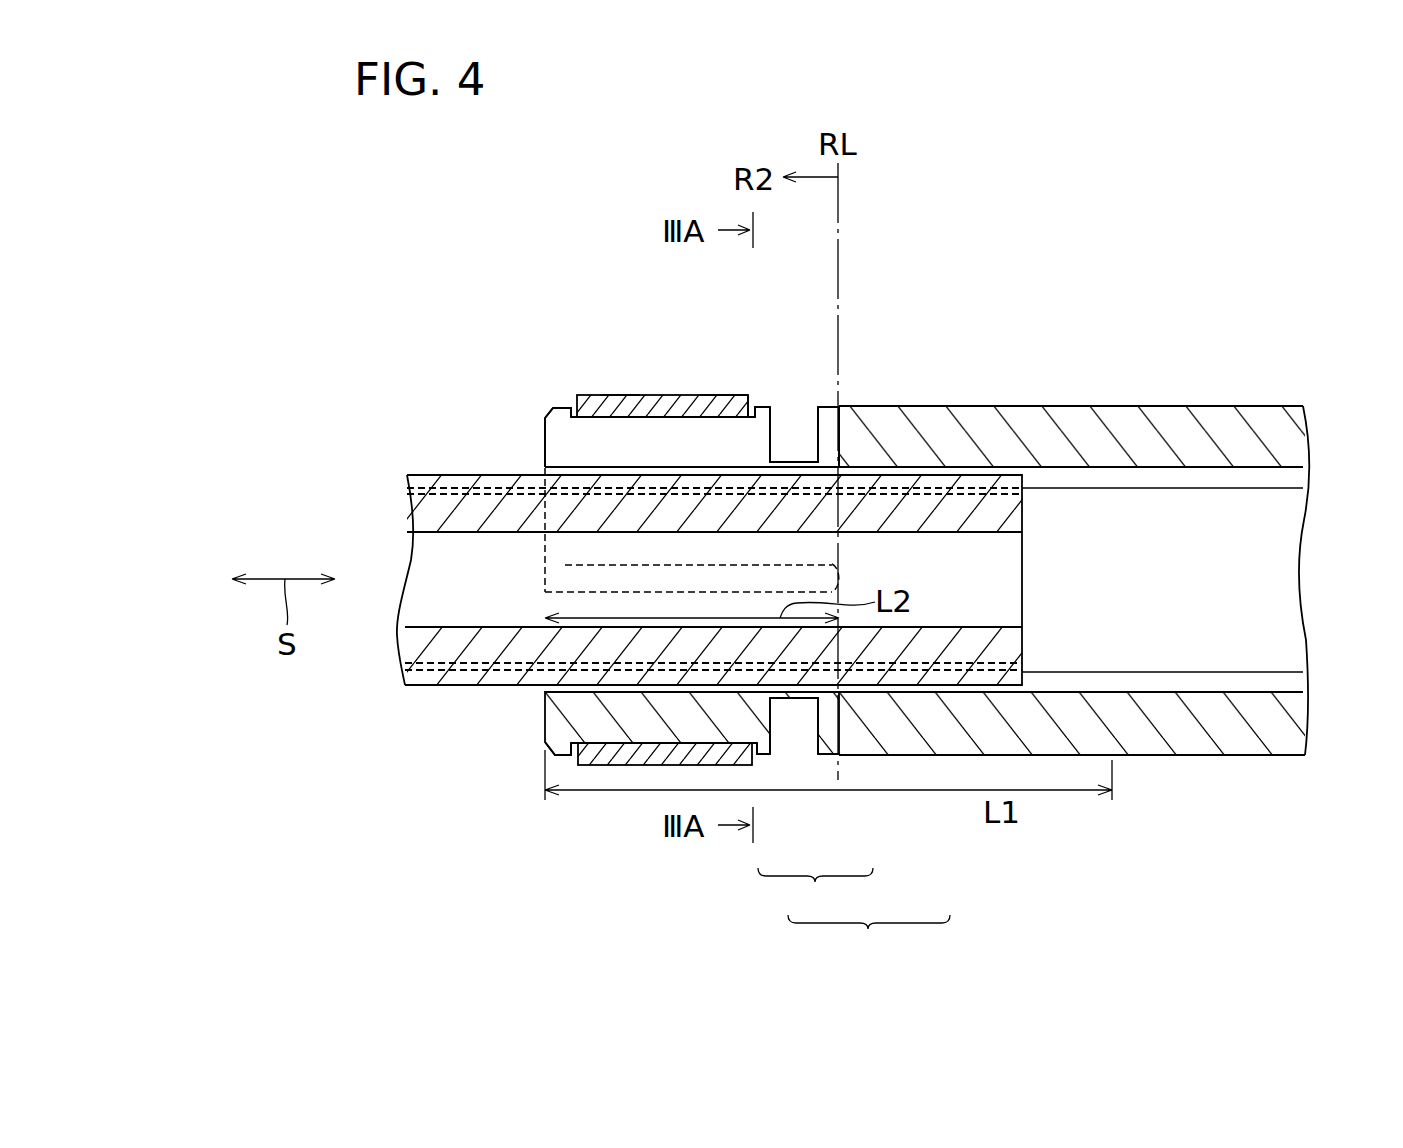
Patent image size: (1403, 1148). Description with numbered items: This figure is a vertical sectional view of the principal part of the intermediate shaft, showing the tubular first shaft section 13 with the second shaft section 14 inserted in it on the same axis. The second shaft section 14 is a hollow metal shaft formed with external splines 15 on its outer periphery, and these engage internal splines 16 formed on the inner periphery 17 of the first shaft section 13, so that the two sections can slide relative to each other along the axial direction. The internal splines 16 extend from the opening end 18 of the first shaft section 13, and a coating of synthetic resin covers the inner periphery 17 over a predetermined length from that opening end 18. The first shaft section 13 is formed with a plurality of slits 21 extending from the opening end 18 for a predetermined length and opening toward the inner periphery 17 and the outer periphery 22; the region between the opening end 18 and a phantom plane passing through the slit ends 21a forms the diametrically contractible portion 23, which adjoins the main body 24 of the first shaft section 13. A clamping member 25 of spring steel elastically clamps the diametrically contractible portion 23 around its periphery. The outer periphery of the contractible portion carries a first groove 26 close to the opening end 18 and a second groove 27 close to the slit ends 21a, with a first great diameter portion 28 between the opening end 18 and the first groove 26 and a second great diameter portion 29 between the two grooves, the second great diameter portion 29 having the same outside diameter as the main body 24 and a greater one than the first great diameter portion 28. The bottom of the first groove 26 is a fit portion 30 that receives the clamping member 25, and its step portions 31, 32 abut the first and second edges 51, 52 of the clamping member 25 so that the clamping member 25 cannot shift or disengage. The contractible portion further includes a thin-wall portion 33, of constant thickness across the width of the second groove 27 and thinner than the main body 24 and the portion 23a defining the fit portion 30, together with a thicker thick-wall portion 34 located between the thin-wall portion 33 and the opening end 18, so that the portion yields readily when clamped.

The first shaft section 13 is at (869, 940).
The second shaft section 14 is at (427, 702).
The external splines 15 is at (477, 672).
The internal splines 16 is at (1161, 668).
The inner periphery 17 is at (1212, 672).
The opening end 18 is at (545, 450).
The slits 21 is at (583, 443).
The slit ends 21a is at (840, 432).
The outer periphery 22 is at (968, 406).
The diametrically contractible portion 23 is at (709, 806).
The portion defining the fit portion 23a is at (613, 718).
The main body 24 is at (920, 732).
The clamping member 25 is at (598, 767).
The first groove 26 is at (627, 390).
The second groove 27 is at (772, 435).
The first great diameter portion 28 is at (570, 408).
The second great diameter portion 29 is at (758, 400).
The fit portion 30 is at (662, 402).
The step portion 31 is at (582, 400).
The step portion 32 is at (752, 406).
The thin-wall portion 33 is at (792, 696).
The thick-wall portion 34 is at (737, 718).
The first edge 51 is at (598, 398).
The second edge 52 is at (718, 400).